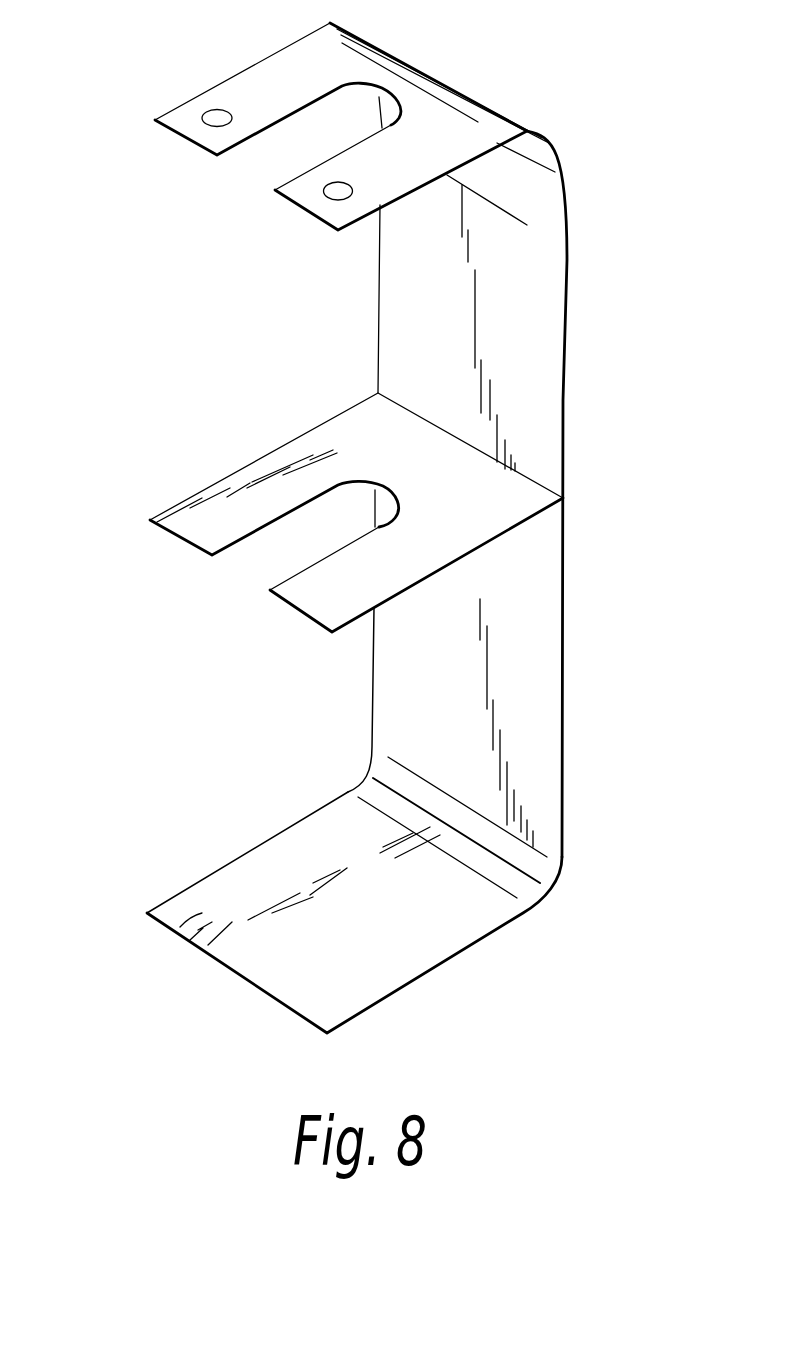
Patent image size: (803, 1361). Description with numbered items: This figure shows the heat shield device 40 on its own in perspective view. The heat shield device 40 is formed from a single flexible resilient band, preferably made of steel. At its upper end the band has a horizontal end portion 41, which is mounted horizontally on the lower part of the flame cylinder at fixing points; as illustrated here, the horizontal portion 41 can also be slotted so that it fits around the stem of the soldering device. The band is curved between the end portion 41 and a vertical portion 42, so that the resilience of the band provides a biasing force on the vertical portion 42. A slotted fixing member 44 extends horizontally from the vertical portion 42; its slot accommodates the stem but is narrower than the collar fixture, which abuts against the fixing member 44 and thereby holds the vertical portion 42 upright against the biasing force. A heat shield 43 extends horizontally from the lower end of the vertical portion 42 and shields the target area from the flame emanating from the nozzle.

The heat shield device 40 is at (371, 524).
The end portion 41 is at (327, 139).
The vertical portion 42 is at (540, 390).
The heat shield 43 is at (205, 913).
The slotted fixing member 44 is at (243, 477).